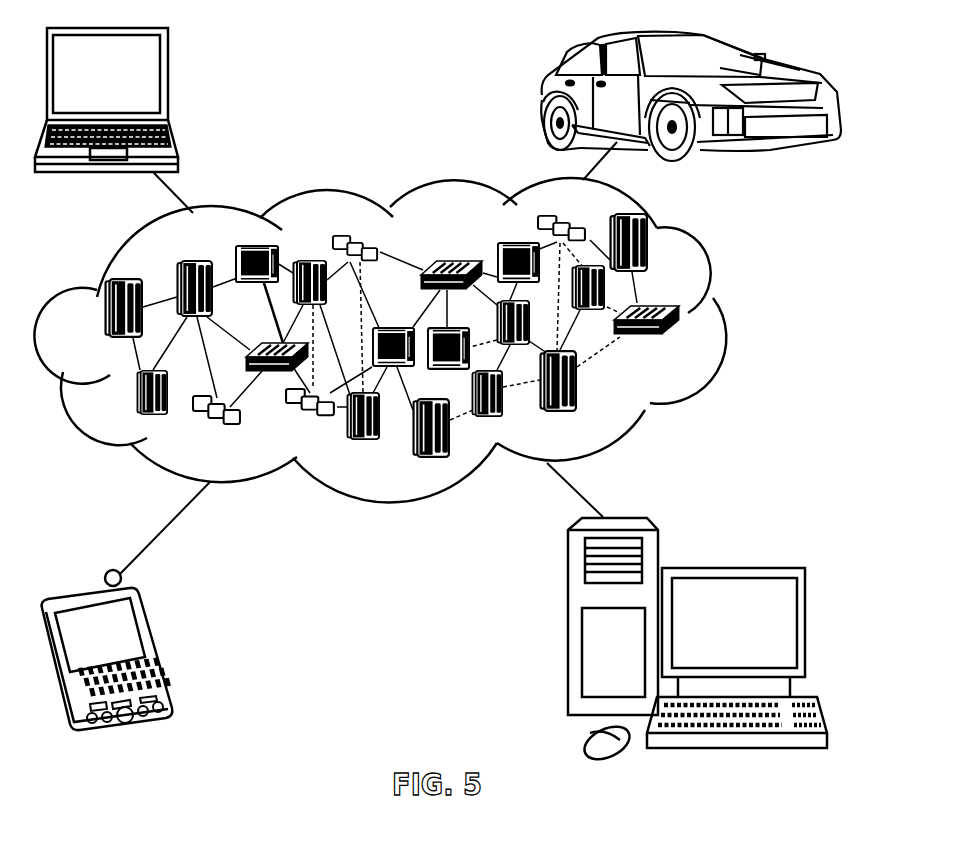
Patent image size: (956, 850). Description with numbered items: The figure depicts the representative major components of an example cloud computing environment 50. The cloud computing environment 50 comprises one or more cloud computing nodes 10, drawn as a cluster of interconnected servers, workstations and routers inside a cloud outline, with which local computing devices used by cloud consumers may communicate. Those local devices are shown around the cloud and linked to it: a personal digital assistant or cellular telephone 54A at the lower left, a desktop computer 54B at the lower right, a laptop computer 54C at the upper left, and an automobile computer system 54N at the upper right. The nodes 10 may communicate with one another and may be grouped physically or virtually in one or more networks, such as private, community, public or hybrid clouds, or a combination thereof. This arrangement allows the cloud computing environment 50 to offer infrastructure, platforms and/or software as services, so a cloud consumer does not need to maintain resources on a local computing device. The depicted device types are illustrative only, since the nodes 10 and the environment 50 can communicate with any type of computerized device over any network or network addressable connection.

The cloud computing environment 50 is at (731, 317).
The cloud computing nodes 10 is at (683, 343).
The personal digital assistant or cellular telephone 54A is at (157, 646).
The desktop computer 54B is at (732, 568).
The laptop computer 54C is at (168, 80).
The automobile computer system 54N is at (542, 98).